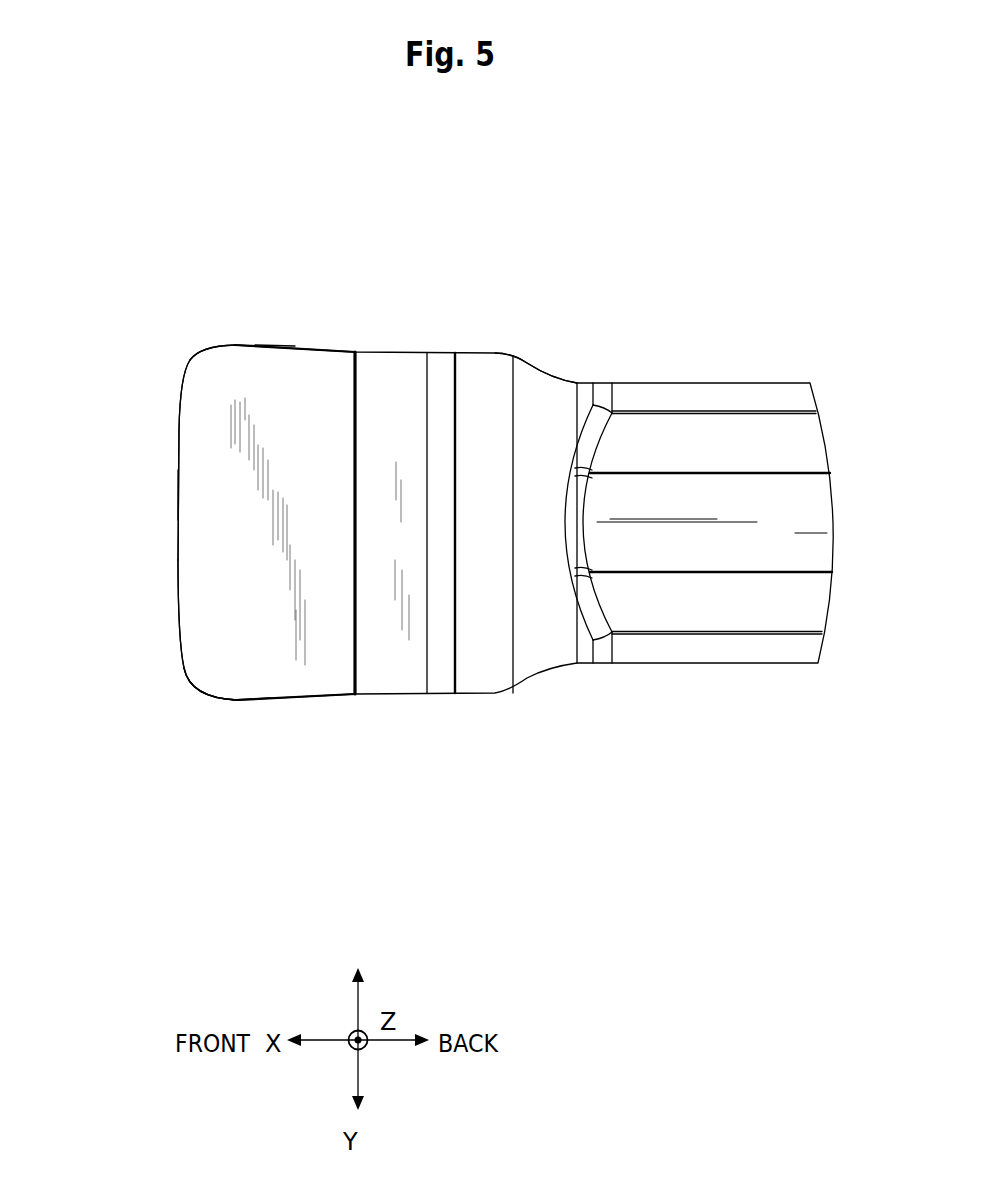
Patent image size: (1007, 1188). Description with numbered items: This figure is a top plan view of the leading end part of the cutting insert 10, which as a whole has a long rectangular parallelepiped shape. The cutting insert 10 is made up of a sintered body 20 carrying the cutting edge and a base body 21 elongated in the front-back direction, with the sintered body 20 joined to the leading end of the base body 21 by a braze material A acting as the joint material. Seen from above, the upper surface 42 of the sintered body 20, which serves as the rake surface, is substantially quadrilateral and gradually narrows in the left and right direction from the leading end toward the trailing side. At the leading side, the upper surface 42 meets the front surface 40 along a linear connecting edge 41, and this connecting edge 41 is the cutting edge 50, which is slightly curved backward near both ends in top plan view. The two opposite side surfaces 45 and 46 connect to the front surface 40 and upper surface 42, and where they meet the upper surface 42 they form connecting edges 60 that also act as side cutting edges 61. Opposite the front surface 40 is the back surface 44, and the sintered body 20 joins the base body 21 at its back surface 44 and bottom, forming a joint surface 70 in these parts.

The cutting insert 10 is at (614, 378).
The sintered body 20 is at (188, 348).
The base body 21 is at (549, 366).
The front surface 40 is at (178, 434).
The connecting edge 41 is at (178, 525).
The upper surface 42 is at (304, 380).
The back surface 44 is at (357, 408).
The side surface 45 is at (281, 700).
The side surface 46 is at (255, 345).
The cutting edge 50 is at (178, 496).
The connecting edge 60 is at (235, 345).
The side cutting edge 61 is at (275, 345).
The joint surface 70 is at (357, 598).
The braze material A is at (357, 652).